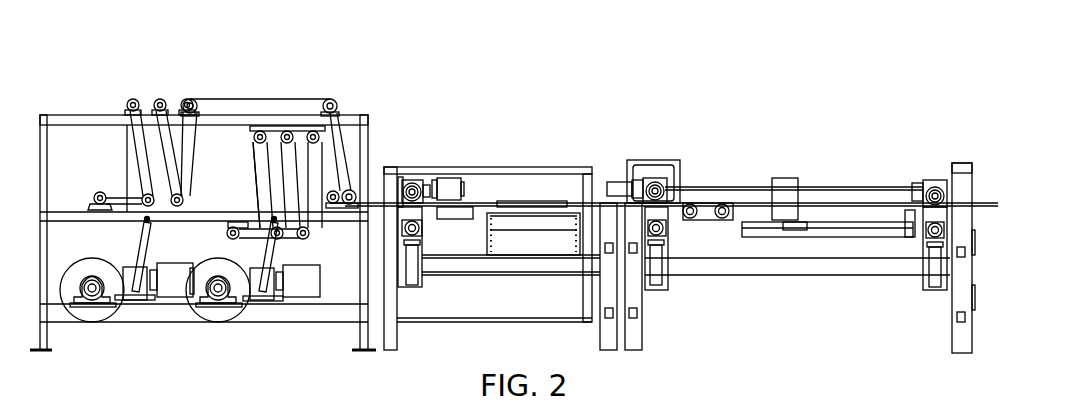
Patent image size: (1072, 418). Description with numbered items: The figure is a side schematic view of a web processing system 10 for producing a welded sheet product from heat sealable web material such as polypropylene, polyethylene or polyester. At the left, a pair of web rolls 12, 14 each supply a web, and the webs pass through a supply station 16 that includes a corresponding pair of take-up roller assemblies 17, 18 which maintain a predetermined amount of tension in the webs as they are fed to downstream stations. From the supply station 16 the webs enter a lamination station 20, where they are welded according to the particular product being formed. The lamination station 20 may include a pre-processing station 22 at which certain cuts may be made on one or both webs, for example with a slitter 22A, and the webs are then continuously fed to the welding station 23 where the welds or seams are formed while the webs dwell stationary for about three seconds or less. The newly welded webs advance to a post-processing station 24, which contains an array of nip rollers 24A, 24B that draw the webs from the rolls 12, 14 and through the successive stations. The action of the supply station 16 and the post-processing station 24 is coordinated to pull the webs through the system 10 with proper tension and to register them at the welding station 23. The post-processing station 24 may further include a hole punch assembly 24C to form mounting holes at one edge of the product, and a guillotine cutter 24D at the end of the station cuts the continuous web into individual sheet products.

The web processing system 10 is at (669, 129).
The web roll 12 is at (127, 315).
The web roll 14 is at (253, 315).
The supply station 16 is at (203, 180).
The take-up roller assembly 17 is at (89, 140).
The take-up roller assembly 18 is at (204, 148).
The lamination station 20 is at (500, 215).
The pre-processing station 22 is at (458, 144).
The slitter 22A is at (488, 150).
The welding station 23 is at (549, 189).
The post-processing station 24 is at (787, 200).
The nip roller 24A is at (677, 159).
The nip roller 24B is at (897, 161).
The hole punch assembly 24C is at (828, 162).
The guillotine cutter 24D is at (1004, 221).